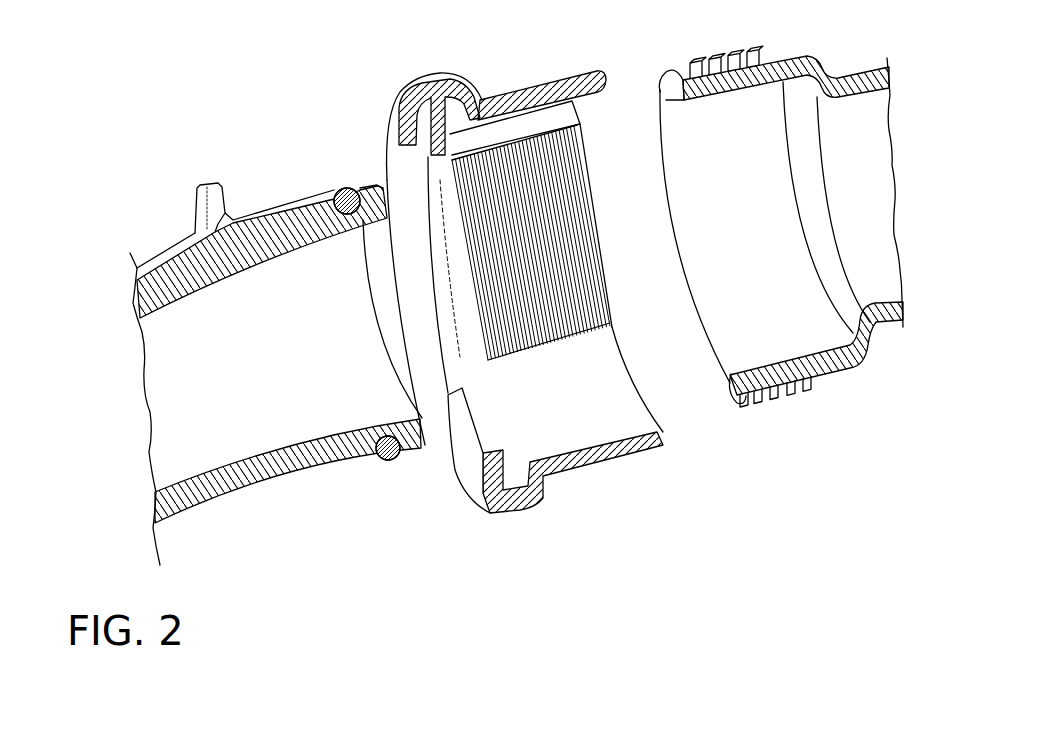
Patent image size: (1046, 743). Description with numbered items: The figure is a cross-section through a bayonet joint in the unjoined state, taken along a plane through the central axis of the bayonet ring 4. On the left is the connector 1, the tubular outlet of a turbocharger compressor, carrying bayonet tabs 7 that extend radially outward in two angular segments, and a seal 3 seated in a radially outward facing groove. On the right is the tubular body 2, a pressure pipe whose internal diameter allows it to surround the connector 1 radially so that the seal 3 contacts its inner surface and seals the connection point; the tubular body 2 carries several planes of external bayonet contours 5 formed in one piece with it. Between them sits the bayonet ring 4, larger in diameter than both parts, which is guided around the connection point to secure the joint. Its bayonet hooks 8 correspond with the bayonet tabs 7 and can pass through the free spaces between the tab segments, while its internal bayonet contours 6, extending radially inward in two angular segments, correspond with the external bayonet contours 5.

The connector 1 is at (276, 375).
The tubular body 2 is at (867, 353).
The seal 3 is at (330, 187).
The bayonet ring 4 is at (668, 447).
The external bayonet contours 5 is at (700, 58).
The internal bayonet contours 6 is at (467, 213).
The bayonet tabs 7 is at (192, 207).
The bayonet hooks 8 is at (472, 457).